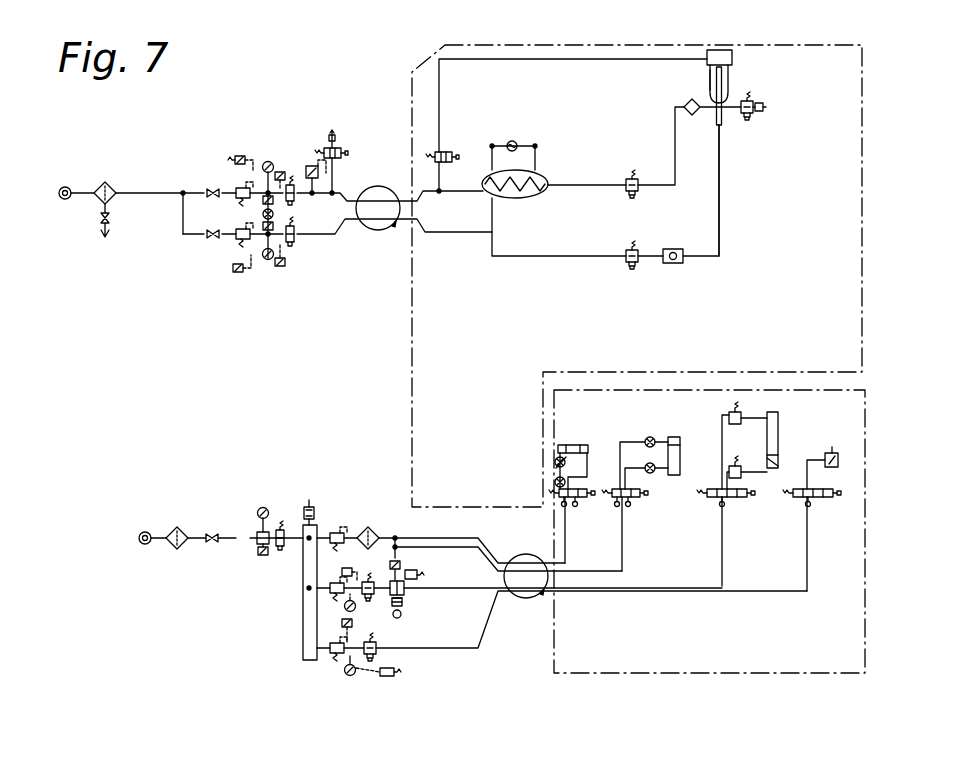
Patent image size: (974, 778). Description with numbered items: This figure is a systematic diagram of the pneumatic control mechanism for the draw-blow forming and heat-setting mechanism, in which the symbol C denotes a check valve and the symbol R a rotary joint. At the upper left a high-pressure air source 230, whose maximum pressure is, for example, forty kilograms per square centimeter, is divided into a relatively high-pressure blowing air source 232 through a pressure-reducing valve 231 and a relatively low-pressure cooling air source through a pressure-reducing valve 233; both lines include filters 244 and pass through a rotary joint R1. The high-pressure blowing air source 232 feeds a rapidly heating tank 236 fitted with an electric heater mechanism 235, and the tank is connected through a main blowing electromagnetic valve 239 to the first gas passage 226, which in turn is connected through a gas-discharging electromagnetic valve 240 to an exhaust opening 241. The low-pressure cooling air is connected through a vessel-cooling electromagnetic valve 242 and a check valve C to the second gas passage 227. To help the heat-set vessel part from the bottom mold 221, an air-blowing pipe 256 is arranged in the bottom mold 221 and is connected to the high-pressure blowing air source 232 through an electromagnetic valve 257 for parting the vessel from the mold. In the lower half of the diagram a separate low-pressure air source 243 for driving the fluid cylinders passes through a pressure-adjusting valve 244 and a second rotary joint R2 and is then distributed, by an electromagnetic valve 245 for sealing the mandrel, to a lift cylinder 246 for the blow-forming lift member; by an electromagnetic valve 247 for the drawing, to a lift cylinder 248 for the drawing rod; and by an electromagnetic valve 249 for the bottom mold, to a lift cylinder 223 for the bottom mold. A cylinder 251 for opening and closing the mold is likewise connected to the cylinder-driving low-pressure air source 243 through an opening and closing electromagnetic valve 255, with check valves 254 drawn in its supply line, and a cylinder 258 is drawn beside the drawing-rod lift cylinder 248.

The high-pressure air source 230 is at (70, 186).
The pressure-reducing valve 231 is at (238, 186).
The pressure-reducing valve 233 is at (238, 247).
The pressure-adjusting valve 244 is at (294, 243).
The high-pressure blowing air source 232 is at (340, 191).
The electromagnetic valve for parting the vessel from the mold 257 is at (437, 150).
The rotary joint R1 is at (380, 231).
The electric heater mechanism 235 is at (542, 193).
The rapidly heating tank 236 is at (495, 199).
The main blowing electromagnetic valve 239 is at (626, 182).
The vessel-cooling electromagnetic valve 242 is at (627, 253).
The check valve C is at (683, 258).
The first gas passage 226 is at (692, 115).
The gas-discharging electromagnetic valve 240 is at (745, 100).
The exhaust opening 241 is at (766, 107).
The bottom mold 221 is at (733, 55).
The air-blowing pipe 256 is at (705, 62).
The second gas passage 227 is at (720, 142).
The low-pressure air source 243 is at (142, 532).
The rotary joint R2 is at (518, 556).
The opening and closing electromagnetic valve 255 is at (578, 500).
The check valve 254 is at (555, 458).
The cylinder for opening and closing the mold 251 is at (573, 444).
The electromagnetic valve for the bottom mold 249 is at (636, 498).
The lift cylinder for the bottom mold 223 is at (673, 440).
The electromagnetic valve for the drawing 247 is at (732, 500).
The cylinder 258 is at (770, 412).
The lift cylinder for the drawing rod 248 is at (779, 432).
The electromagnetic valve for sealing the mandrel 245 is at (838, 494).
The lift cylinder for the blow-forming lift member 246 is at (840, 460).